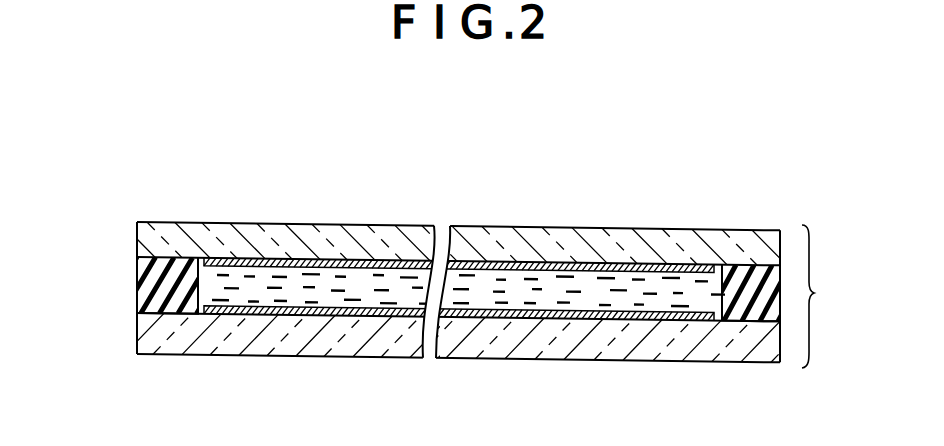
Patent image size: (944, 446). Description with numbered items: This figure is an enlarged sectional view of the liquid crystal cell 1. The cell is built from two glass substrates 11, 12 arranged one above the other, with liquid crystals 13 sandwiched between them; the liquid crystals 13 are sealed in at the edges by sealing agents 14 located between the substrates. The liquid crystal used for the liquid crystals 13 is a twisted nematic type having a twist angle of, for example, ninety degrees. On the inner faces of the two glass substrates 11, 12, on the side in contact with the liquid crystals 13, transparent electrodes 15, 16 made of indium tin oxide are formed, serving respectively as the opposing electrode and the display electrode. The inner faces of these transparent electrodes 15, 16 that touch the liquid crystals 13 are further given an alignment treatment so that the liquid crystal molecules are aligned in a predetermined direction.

The liquid crystal cell 1 is at (840, 315).
The glass substrate 11 is at (137, 232).
The glass substrate 12 is at (137, 346).
The liquid crystals 13 is at (582, 290).
The sealing agents 14 is at (137, 289).
The transparent electrode 15 is at (348, 262).
The transparent electrode 16 is at (340, 314).